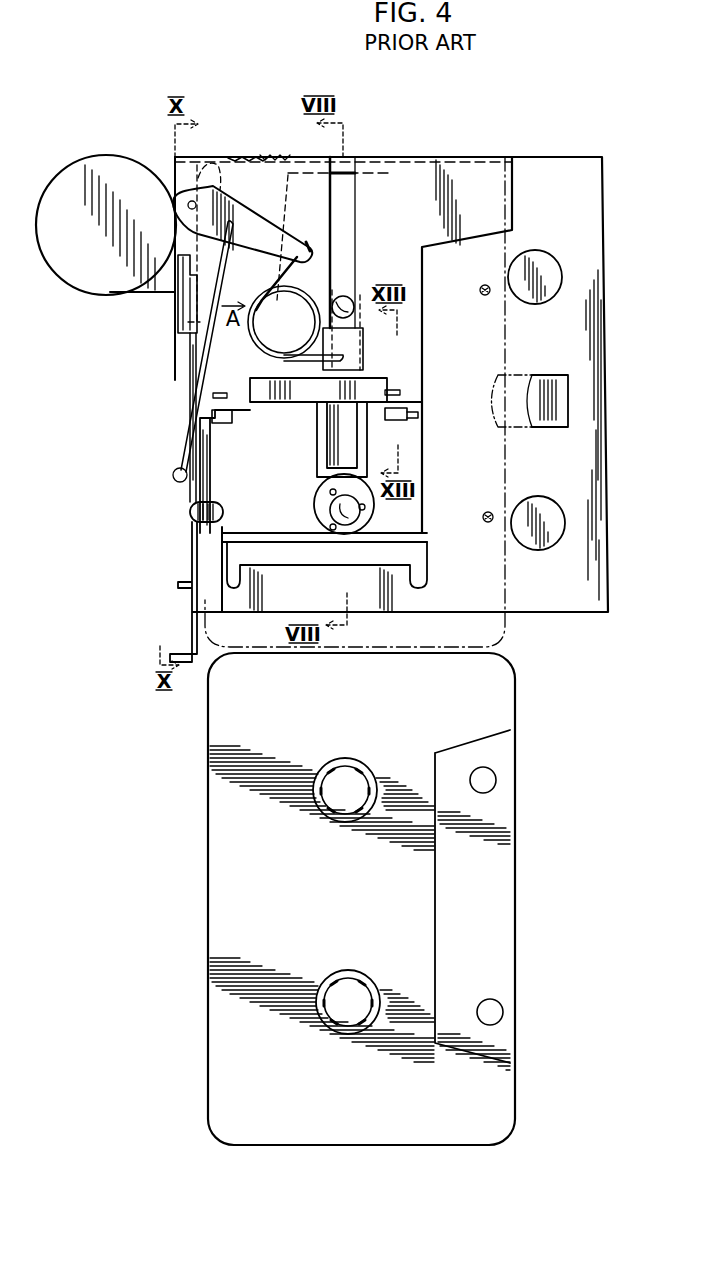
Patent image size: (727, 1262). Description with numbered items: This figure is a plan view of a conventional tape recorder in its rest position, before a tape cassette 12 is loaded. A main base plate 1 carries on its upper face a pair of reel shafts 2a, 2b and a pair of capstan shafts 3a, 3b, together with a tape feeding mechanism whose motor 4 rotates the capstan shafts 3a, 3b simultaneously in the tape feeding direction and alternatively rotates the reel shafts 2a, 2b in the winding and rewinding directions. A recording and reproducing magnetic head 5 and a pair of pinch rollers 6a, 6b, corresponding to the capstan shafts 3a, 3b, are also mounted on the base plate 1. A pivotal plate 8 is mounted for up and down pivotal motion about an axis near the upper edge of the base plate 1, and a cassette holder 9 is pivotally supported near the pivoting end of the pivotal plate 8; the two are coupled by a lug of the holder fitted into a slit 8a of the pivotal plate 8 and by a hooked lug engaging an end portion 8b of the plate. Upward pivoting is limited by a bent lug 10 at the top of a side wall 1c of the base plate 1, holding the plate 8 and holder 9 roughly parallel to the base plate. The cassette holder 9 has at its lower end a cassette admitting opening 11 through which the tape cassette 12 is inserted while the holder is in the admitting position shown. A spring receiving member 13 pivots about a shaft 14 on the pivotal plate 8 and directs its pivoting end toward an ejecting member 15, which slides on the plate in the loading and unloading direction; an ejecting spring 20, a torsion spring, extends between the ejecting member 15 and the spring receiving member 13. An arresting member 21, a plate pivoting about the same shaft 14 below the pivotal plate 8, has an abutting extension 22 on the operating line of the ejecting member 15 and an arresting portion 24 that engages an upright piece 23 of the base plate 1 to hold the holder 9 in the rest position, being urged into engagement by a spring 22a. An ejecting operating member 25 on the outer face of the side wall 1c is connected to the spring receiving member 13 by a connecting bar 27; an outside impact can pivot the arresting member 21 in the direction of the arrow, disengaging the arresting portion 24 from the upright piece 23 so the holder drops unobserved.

The main base plate 1 is at (606, 348).
The side wall 1c is at (190, 492).
The reel shaft 2a is at (330, 512).
The reel shaft 2b is at (352, 300).
The capstan shaft 3a is at (486, 522).
The capstan shaft 3b is at (482, 294).
The motor 4 is at (78, 278).
The recording and reproducing magnetic head 5 is at (548, 430).
The pinch roller 6a is at (538, 545).
The pinch roller 6b is at (540, 258).
The pivotal plate 8 is at (424, 368).
The slit 8a is at (207, 400).
The end portion 8b is at (222, 424).
The cassette holder 9 is at (428, 418).
The bent lug 10 is at (222, 510).
The cassette admitting opening 11 is at (300, 565).
The tape cassette 12 is at (207, 790).
The spring receiving member 13 is at (256, 222).
The shaft 14 is at (188, 205).
The ejecting member 15 is at (330, 425).
The ejecting spring 20 is at (258, 348).
The arresting member 21 is at (217, 157).
The abutting extension 22 is at (340, 174).
The spring 22a is at (243, 157).
The upright piece 23 is at (190, 322).
The arresting portion 24 is at (190, 298).
The ejecting operating member 25 is at (190, 612).
The connecting bar 27 is at (236, 292).